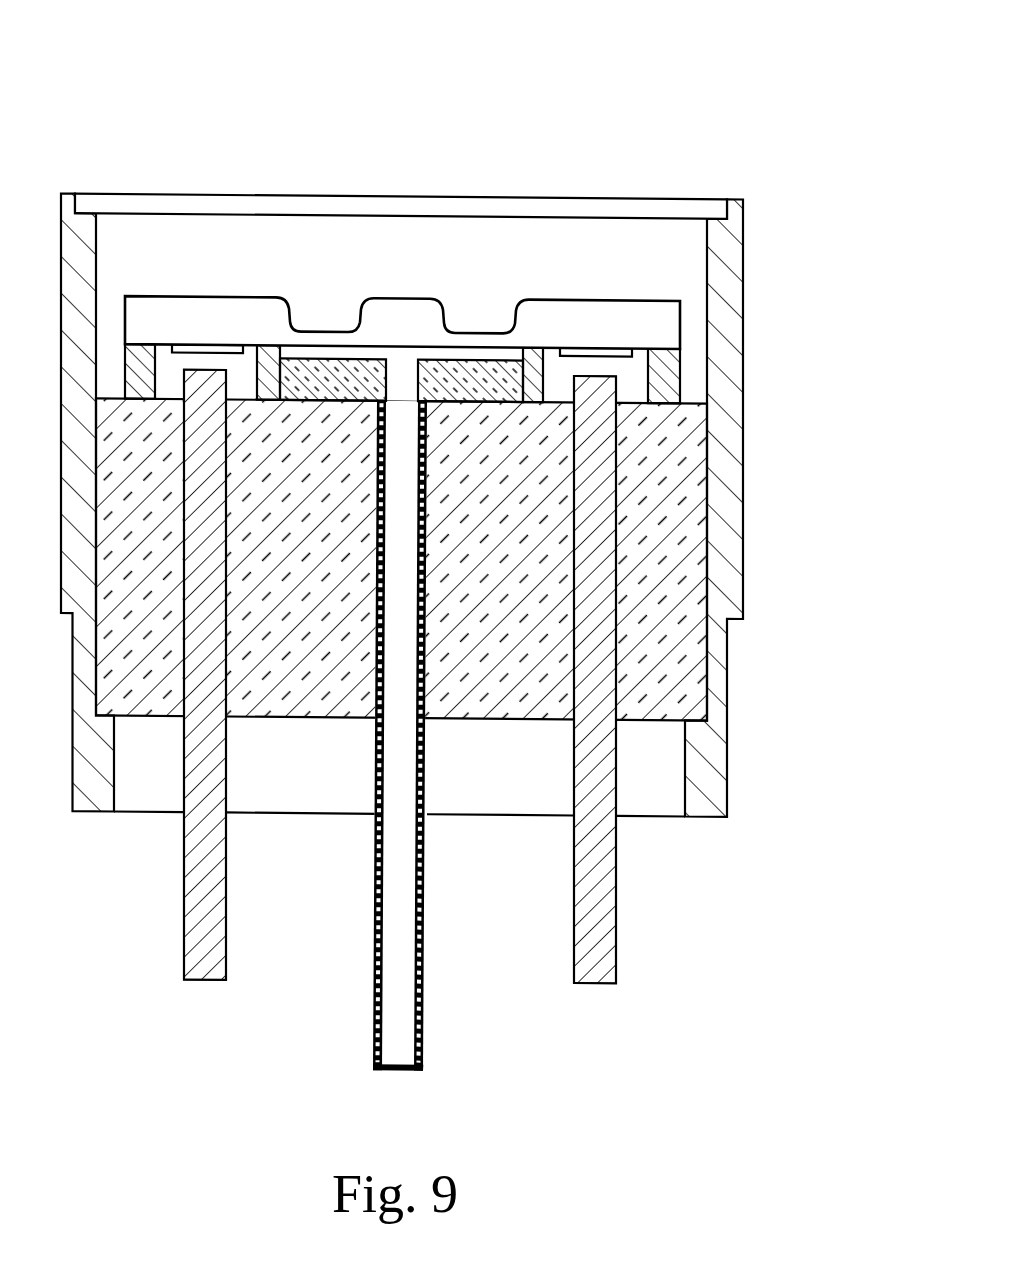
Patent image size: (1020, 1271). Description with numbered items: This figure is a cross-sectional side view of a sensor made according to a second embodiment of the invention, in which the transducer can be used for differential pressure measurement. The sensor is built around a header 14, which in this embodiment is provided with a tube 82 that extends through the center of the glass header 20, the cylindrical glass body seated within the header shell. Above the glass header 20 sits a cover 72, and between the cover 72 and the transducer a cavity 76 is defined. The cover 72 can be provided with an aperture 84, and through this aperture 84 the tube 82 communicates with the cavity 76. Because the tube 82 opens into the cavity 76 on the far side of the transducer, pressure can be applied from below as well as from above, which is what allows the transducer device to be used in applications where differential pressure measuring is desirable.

The header 14 is at (745, 247).
The glass header 20 is at (693, 520).
The cover 72 is at (475, 365).
The cavity 76 is at (328, 343).
The tube 82 is at (423, 997).
The aperture 84 is at (403, 365).